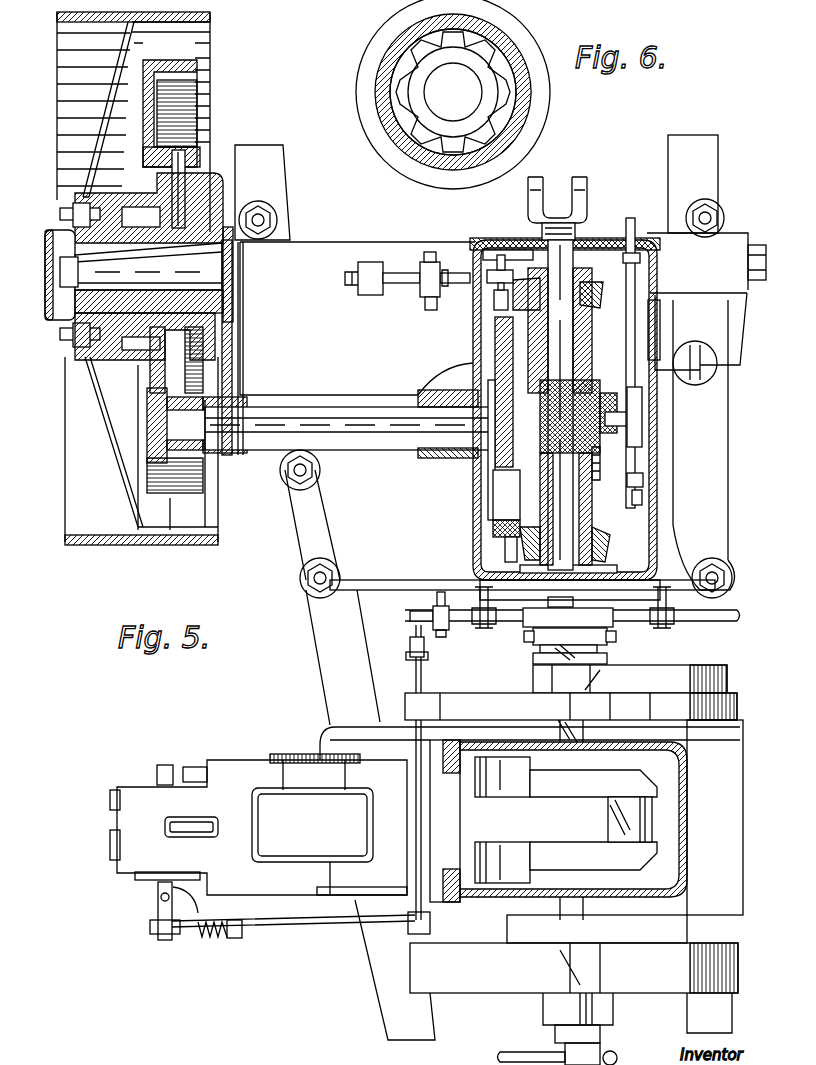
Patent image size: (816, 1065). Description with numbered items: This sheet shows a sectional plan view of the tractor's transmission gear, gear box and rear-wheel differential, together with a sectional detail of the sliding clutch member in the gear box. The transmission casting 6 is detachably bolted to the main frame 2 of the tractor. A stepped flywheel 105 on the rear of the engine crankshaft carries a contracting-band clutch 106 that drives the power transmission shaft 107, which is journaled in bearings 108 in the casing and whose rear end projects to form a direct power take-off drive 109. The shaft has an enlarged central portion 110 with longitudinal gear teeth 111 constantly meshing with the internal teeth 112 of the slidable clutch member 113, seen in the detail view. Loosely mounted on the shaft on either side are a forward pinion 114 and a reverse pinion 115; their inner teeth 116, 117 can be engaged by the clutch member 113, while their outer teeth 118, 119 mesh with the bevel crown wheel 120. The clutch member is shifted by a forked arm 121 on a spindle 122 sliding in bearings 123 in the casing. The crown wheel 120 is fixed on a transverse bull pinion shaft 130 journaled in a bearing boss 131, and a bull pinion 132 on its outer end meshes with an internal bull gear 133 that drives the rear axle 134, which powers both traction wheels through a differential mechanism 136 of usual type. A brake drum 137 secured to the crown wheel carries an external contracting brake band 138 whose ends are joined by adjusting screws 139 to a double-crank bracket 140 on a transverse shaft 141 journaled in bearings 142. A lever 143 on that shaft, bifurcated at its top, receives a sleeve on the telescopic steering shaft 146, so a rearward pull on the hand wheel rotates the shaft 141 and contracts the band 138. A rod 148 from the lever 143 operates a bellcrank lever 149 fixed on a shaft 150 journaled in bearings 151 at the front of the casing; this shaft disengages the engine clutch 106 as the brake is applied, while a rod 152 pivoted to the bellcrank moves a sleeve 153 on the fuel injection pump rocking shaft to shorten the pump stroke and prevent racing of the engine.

In FIG. 5, the main frame 2 is at (270, 172).
In FIG. 5, the transmission casting 6 is at (655, 480).
In FIG. 5, the flywheel 105 is at (402, 705).
In FIG. 5, the clutch 106 is at (600, 683).
In FIG. 6, the power transmission shaft 107 is at (470, 95).
In FIG. 5, the power transmission shaft 107 is at (562, 343).
In FIG. 5, the bearings 108 is at (533, 240).
In FIG. 5, the power take-off drive 109 is at (578, 213).
In FIG. 6, the enlarged central portion 110 is at (420, 97).
In FIG. 5, the enlarged central portion 110 is at (593, 392).
In FIG. 6, the longitudinal gear teeth 111 is at (398, 105).
In FIG. 5, the longitudinal gear teeth 111 is at (647, 438).
In FIG. 6, the internal teeth 112 is at (393, 140).
In FIG. 6, the slidable clutch member 113 is at (400, 158).
In FIG. 5, the pinion 114 is at (600, 543).
In FIG. 5, the pinion 115 is at (648, 267).
In FIG. 5, the teeth 116 is at (593, 447).
In FIG. 5, the teeth 117 is at (592, 370).
In FIG. 5, the teeth 118 is at (527, 562).
In FIG. 5, the teeth 119 is at (593, 285).
In FIG. 5, the bevel crown wheel 120 is at (490, 515).
In FIG. 5, the forked arm 121 is at (645, 415).
In FIG. 5, the spindle 122 is at (657, 498).
In FIG. 5, the bearings 123 is at (632, 250).
In FIG. 5, the bull pinion shaft 130 is at (422, 415).
In FIG. 5, the bearing boss 131 is at (417, 452).
In FIG. 5, the bull pinion 132 is at (167, 438).
In FIG. 5, the internal bull gear 133 is at (205, 385).
In FIG. 5, the rear axle 134 is at (210, 271).
In FIG. 5, the differential mechanism 136 is at (208, 172).
In FIG. 5, the brake drum 137 is at (490, 350).
In FIG. 5, the brake band 138 is at (490, 543).
In FIG. 5, the adjusting screws 139 is at (478, 245).
In FIG. 5, the double-crank bracket 140 is at (508, 265).
In FIG. 5, the transverse shaft 141 is at (397, 283).
In FIG. 5, the bearings 142 is at (357, 277).
In FIG. 5, the lever 143 is at (418, 275).
In FIG. 5, the steering shaft 146 is at (430, 311).
In FIG. 5, the rod 148 is at (433, 600).
In FIG. 5, the bellcrank lever 149 is at (438, 631).
In FIG. 5, the shaft 150 is at (688, 617).
In FIG. 5, the bearings 151 is at (477, 628).
In FIG. 5, the rod 152 is at (415, 665).
In FIG. 5, the sleeve 153 is at (417, 935).